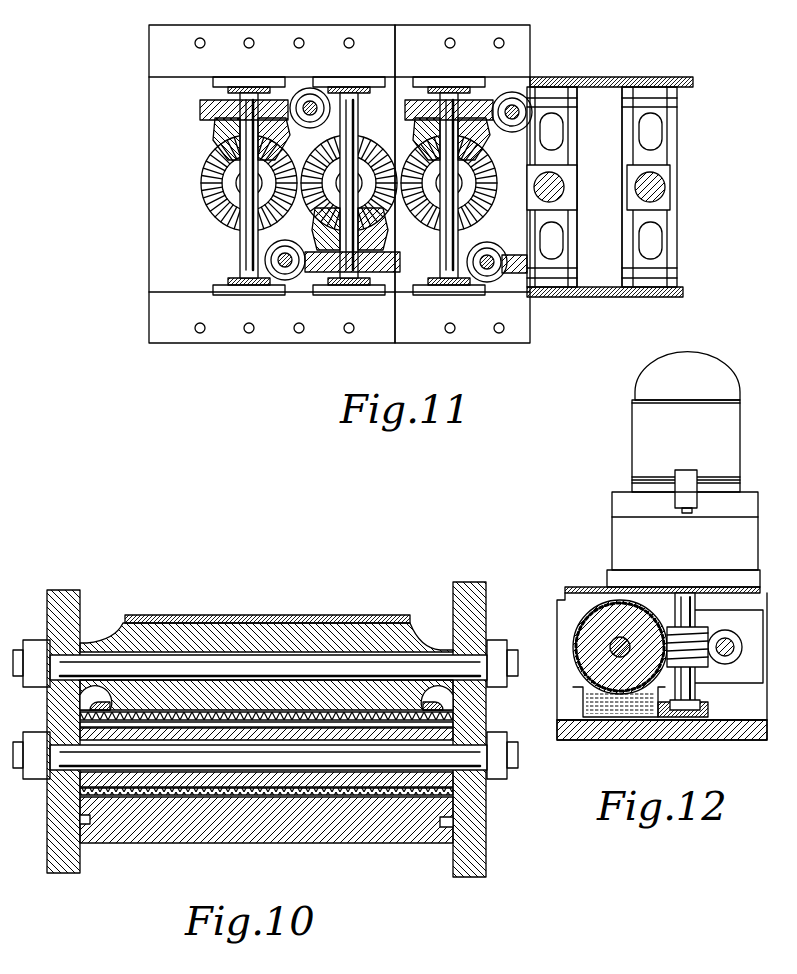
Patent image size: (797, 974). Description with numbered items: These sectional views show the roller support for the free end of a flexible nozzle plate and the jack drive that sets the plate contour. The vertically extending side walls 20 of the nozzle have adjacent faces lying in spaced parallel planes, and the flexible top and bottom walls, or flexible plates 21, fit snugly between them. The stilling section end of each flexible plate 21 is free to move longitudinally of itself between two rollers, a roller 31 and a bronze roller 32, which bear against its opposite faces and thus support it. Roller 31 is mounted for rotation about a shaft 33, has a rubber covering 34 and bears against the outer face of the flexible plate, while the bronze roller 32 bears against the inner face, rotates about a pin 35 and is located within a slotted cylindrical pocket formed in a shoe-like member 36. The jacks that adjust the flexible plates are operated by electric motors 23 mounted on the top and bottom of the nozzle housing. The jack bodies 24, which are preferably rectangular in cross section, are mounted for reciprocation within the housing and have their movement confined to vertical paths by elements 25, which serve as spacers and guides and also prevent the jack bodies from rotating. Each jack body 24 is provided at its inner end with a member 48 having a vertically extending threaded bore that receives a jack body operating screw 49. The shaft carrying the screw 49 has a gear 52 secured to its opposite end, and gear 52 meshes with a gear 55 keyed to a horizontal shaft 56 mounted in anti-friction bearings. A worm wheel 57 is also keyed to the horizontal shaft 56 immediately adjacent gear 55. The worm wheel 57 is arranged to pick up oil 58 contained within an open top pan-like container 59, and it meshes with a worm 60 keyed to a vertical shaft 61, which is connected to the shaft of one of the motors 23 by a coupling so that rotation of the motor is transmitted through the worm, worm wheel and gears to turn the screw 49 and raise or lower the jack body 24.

In FIG. 11, the side wall 20 is at (630, 77).
In FIG. 10, the side wall 20 is at (72, 590).
In FIG. 12, the side wall 20 is at (662, 590).
In FIG. 10, the flexible plate 21 is at (452, 726).
In FIG. 12, the electric motor 23 is at (638, 438).
In FIG. 11, the jack body 24 is at (628, 252).
In FIG. 11, the spacer and guide element 25 is at (611, 126).
In FIG. 10, the roller 31 is at (223, 627).
In FIG. 10, the bronze roller 32 is at (243, 780).
In FIG. 10, the shaft 33 is at (302, 662).
In FIG. 10, the rubber covering 34 is at (207, 615).
In FIG. 10, the pin 35 is at (162, 760).
In FIG. 10, the shoe-like member 36 is at (312, 793).
In FIG. 11, the threaded member 48 is at (566, 172).
In FIG. 11, the jack body operating screw 49 is at (566, 188).
In FIG. 11, the gear 52 is at (204, 163).
In FIG. 11, the gear 55 is at (218, 142).
In FIG. 11, the horizontal shaft 56 is at (247, 242).
In FIG. 11, the worm wheel 57 is at (200, 108).
In FIG. 12, the worm wheel 57 is at (584, 628).
In FIG. 12, the oil 58 is at (637, 735).
In FIG. 12, the pan-like container 59 is at (582, 687).
In FIG. 11, the worm 60 is at (322, 124).
In FIG. 12, the worm 60 is at (700, 677).
In FIG. 12, the vertical shaft 61 is at (697, 693).